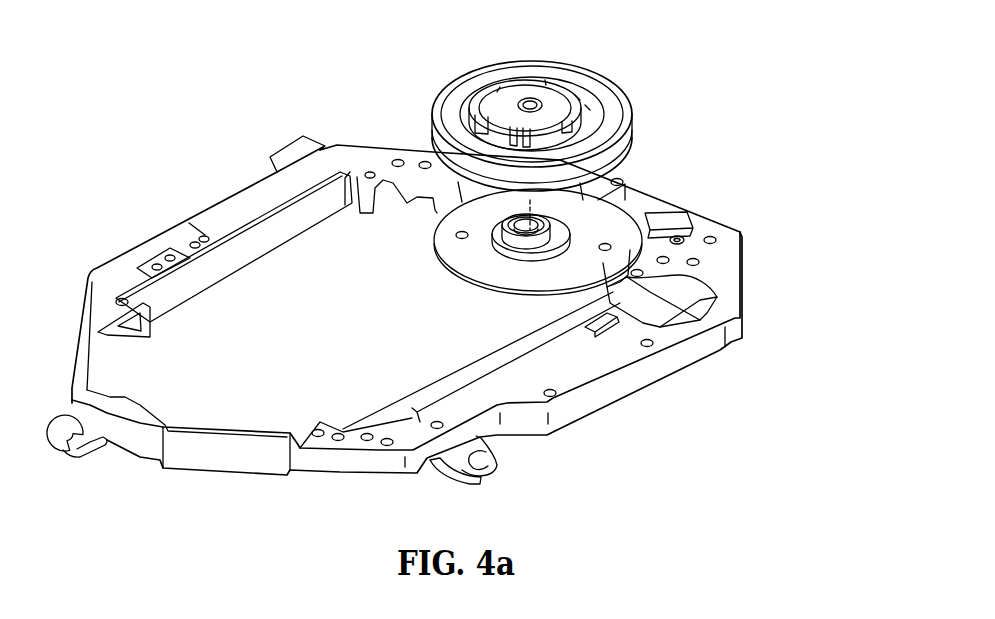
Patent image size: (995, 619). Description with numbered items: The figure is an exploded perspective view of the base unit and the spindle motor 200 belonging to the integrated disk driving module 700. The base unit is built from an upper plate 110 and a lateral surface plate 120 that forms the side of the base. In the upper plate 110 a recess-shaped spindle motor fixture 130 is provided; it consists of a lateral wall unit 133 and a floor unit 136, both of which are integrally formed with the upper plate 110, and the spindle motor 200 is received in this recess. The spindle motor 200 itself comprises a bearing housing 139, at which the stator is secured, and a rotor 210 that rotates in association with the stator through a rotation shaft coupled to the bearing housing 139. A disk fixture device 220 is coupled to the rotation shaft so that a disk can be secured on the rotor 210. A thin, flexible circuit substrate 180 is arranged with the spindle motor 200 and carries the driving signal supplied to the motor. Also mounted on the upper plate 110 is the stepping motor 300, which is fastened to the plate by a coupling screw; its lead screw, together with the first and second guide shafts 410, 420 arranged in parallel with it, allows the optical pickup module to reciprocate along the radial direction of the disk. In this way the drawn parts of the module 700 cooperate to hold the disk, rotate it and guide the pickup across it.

The upper plate 110 is at (228, 205).
The lateral surface plate 120 is at (593, 402).
The spindle motor fixture 130 is at (449, 273).
The lateral wall unit 133 is at (438, 212).
The floor unit 136 is at (481, 295).
The bearing housing 139 is at (560, 228).
The circuit substrate 180 is at (450, 253).
The spindle motor 200 is at (609, 82).
The rotor 210 is at (463, 84).
The disk fixture device 220 is at (533, 90).
The stepping motor 300 is at (658, 302).
The first guide shaft 410 is at (380, 410).
The second guide shaft 420 is at (227, 273).
The integrated disk driving module 700 is at (742, 111).